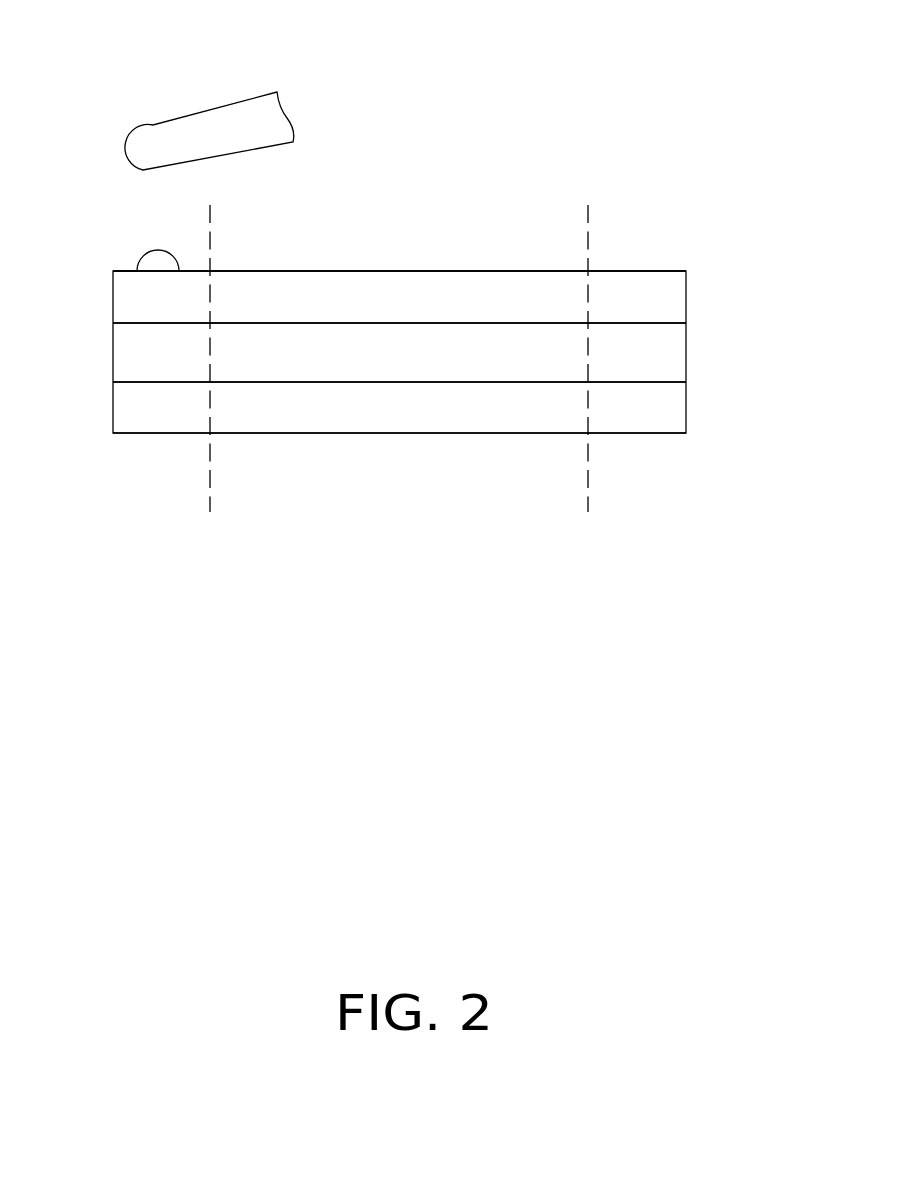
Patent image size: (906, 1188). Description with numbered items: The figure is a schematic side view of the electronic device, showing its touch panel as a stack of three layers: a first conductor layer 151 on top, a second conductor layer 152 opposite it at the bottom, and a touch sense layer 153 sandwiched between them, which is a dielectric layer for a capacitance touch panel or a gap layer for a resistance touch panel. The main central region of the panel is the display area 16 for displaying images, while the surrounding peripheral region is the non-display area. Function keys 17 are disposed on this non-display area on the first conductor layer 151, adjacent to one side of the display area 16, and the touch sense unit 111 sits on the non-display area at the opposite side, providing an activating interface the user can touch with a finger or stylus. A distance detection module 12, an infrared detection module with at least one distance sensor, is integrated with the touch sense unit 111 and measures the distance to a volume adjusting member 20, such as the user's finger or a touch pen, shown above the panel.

The volume adjusting member 20 is at (225, 122).
The function keys 17 is at (638, 271).
The display area 16 is at (338, 270).
The distance detection module 12 is at (158, 258).
The touch sense unit 111 is at (125, 270).
The first conductor layer 151 is at (670, 302).
The touch sense layer 153 is at (670, 358).
The second conductor layer 152 is at (670, 420).